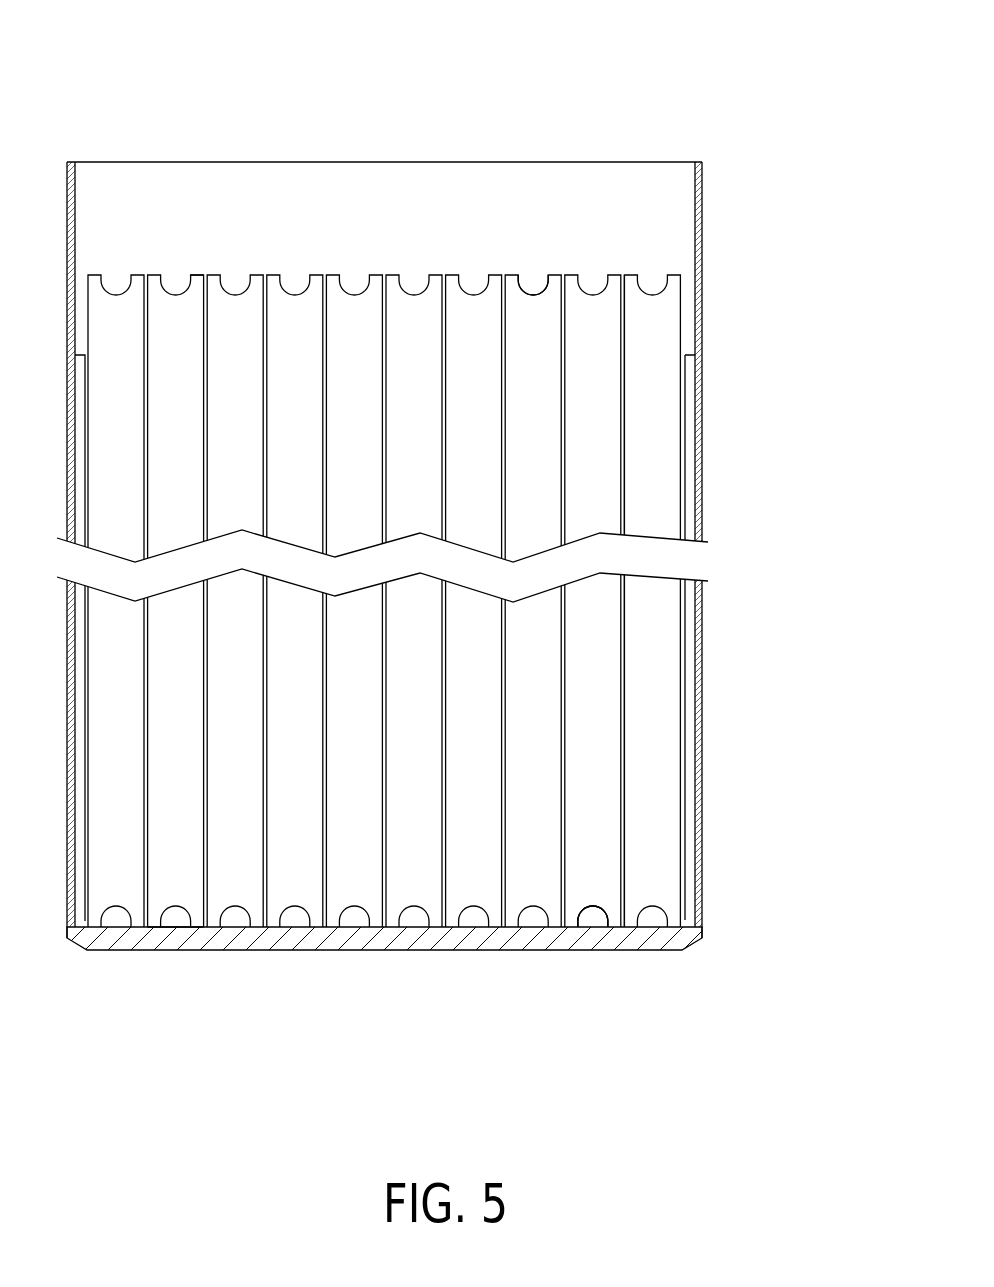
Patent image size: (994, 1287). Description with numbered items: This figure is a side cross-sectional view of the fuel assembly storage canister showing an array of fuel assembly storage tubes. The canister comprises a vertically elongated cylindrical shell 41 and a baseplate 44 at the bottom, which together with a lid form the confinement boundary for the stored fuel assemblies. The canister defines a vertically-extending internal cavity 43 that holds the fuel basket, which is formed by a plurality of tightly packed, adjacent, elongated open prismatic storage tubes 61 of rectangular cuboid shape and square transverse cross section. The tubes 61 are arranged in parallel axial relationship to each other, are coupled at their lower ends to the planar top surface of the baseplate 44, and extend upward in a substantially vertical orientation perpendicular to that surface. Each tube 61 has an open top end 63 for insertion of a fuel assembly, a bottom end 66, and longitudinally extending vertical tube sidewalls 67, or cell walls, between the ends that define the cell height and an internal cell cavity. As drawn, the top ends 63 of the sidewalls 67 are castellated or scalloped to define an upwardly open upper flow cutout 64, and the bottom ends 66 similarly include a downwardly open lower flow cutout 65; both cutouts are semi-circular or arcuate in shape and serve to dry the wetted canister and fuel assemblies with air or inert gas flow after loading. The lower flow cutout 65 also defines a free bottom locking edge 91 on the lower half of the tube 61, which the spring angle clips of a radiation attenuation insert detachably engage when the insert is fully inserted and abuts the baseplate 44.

The cylindrical shell 41 is at (702, 218).
The internal cavity 43 is at (643, 190).
The baseplate 44 is at (627, 952).
The storage tube 61 is at (653, 408).
The top end 63 is at (195, 273).
The upper flow cutout 64 is at (531, 277).
The lower flow cutout 65 is at (588, 908).
The bottom end 66 is at (197, 927).
The tube sidewall 67 is at (660, 335).
The bottom locking edge 91 is at (598, 913).